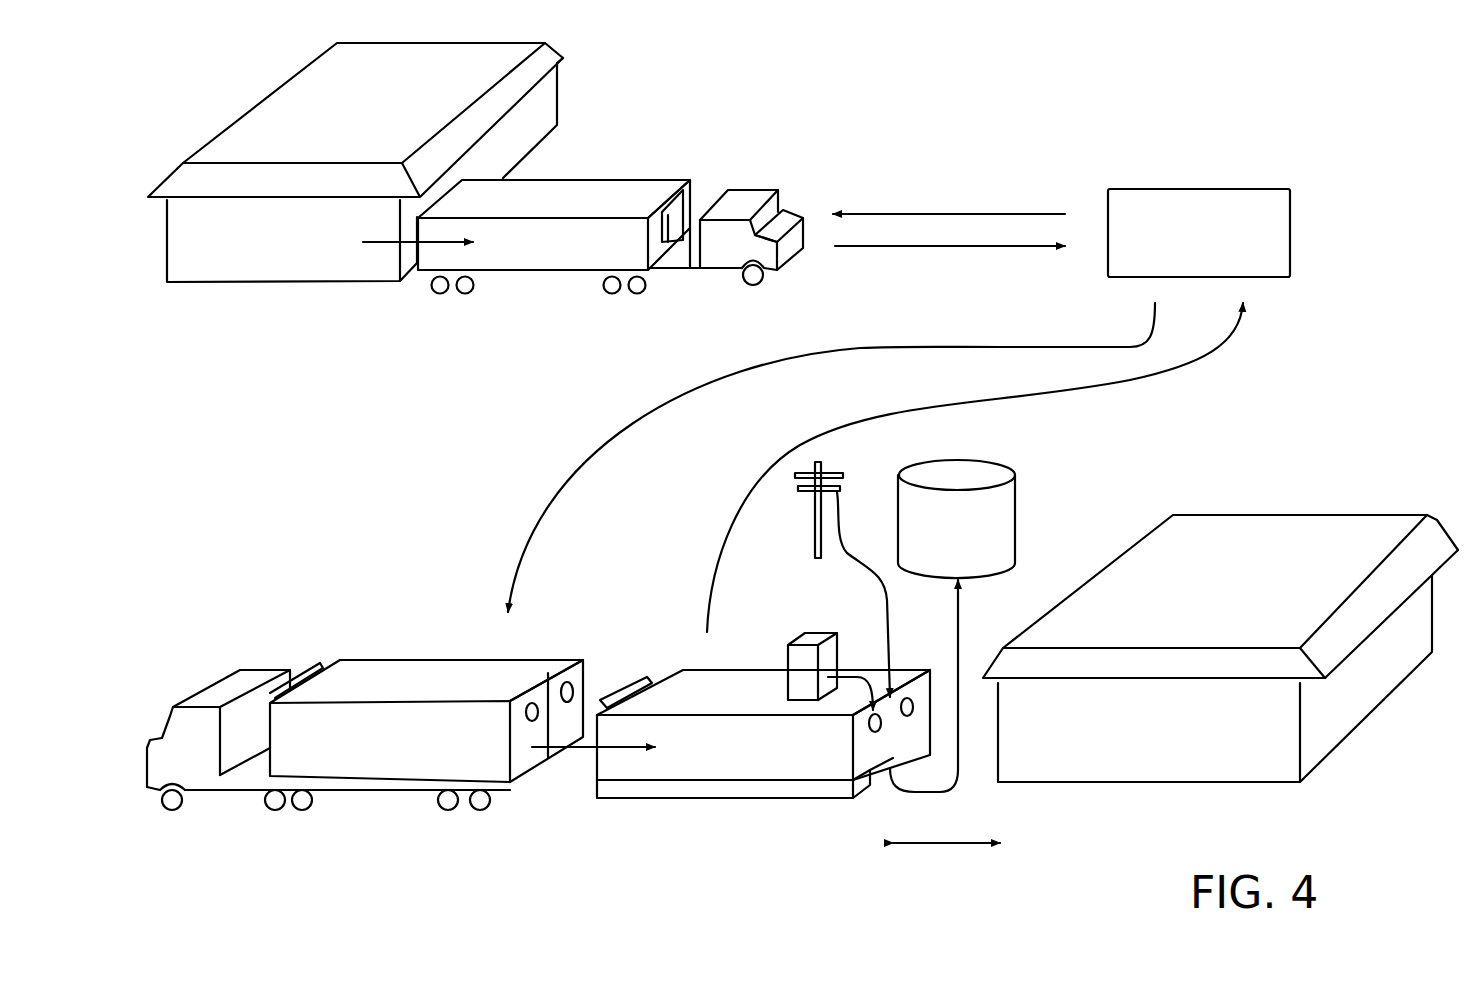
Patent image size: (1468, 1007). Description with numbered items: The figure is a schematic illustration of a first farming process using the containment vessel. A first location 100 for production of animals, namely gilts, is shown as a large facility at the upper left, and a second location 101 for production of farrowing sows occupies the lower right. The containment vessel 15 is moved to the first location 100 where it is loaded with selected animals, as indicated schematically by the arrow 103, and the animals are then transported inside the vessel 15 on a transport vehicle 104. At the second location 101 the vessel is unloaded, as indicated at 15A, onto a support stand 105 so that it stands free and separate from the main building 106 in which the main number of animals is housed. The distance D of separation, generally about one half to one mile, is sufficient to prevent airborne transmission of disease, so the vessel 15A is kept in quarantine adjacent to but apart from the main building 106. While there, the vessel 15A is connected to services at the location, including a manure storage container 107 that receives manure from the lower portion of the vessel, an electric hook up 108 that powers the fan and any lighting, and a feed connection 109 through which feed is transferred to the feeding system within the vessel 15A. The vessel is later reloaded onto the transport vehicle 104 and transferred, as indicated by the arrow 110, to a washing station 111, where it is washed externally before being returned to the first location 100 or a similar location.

The first location for production of animals 100 is at (275, 103).
The arrow 103 is at (385, 247).
The containment vessel 15 is at (603, 178).
The transport vehicle 104 is at (757, 185).
The washing station 111 is at (1212, 190).
The arrow 110 is at (890, 410).
The electric hook up 108 is at (882, 586).
The manure storage container 107 is at (988, 480).
The second location for production of animals 101 is at (1012, 603).
The main building 106 is at (1263, 523).
The unloaded containment vessel 15A is at (680, 668).
The support stand 105 is at (693, 790).
The feed connection 109 is at (802, 633).
The distance of separation D is at (943, 847).